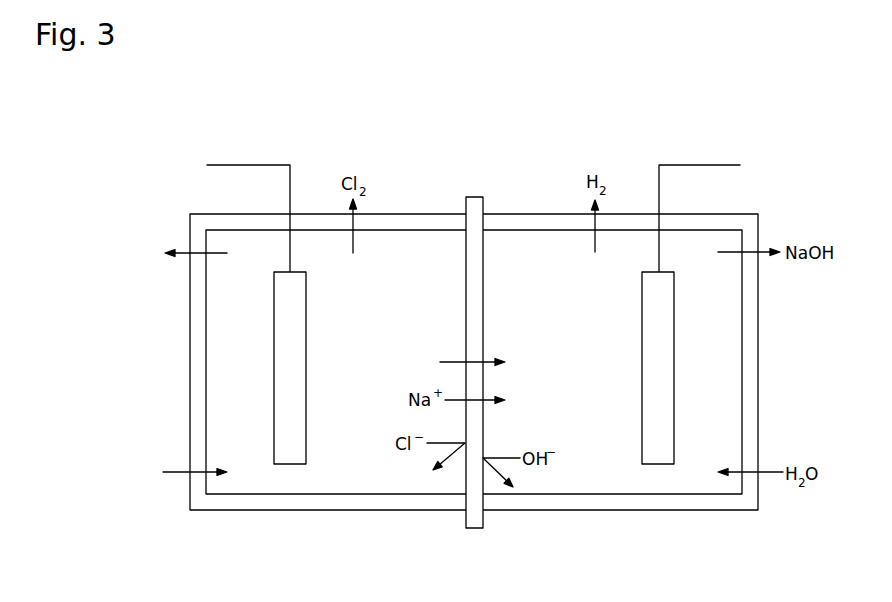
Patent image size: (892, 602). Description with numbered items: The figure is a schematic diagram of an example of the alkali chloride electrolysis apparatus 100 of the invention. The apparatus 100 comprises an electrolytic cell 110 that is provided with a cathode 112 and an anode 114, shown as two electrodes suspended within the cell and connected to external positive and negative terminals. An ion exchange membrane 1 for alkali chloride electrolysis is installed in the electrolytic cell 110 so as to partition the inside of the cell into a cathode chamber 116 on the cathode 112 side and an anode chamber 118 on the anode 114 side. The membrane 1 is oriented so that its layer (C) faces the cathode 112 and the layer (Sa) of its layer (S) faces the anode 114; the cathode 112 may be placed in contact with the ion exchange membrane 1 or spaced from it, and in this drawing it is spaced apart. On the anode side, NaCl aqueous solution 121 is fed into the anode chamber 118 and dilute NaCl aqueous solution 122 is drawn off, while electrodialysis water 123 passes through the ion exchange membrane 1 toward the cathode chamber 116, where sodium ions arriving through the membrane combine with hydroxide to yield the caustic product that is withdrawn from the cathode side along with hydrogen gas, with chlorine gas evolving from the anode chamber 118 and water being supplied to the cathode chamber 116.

The alkali chloride electrolysis apparatus 100 is at (402, 142).
The ion exchange membrane 1 is at (473, 197).
The electrolytic cell 110 is at (269, 512).
The cathode 112 is at (675, 345).
The anode 114 is at (273, 354).
The cathode chamber 116 is at (612, 477).
The anode chamber 118 is at (372, 477).
The NaCl aqueous solution 121 is at (176, 473).
The dilute NaCl aqueous solution 122 is at (175, 255).
The electrodialysis water 123 is at (452, 362).